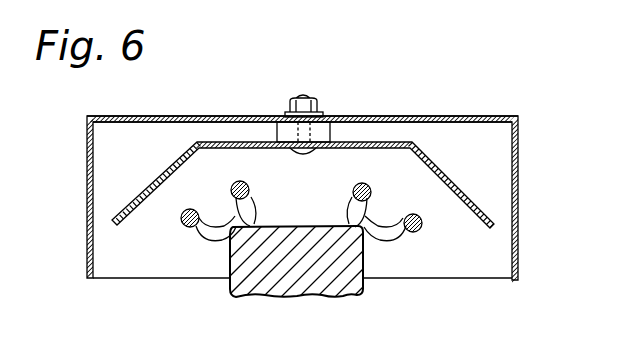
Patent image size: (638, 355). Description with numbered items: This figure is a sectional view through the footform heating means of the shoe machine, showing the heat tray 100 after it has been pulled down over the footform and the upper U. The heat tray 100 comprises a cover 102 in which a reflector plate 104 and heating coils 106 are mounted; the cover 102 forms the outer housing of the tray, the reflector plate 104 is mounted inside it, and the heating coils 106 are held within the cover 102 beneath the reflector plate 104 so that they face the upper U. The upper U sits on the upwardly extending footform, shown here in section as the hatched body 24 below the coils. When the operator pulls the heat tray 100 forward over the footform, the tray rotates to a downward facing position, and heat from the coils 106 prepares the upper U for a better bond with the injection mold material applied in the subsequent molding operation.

The heat tray 100 is at (519, 138).
The cover 102 is at (232, 116).
The reflector plate 104 is at (170, 166).
The heating coils 106 is at (347, 200).
The block 24 is at (266, 286).
The upper U is at (231, 286).